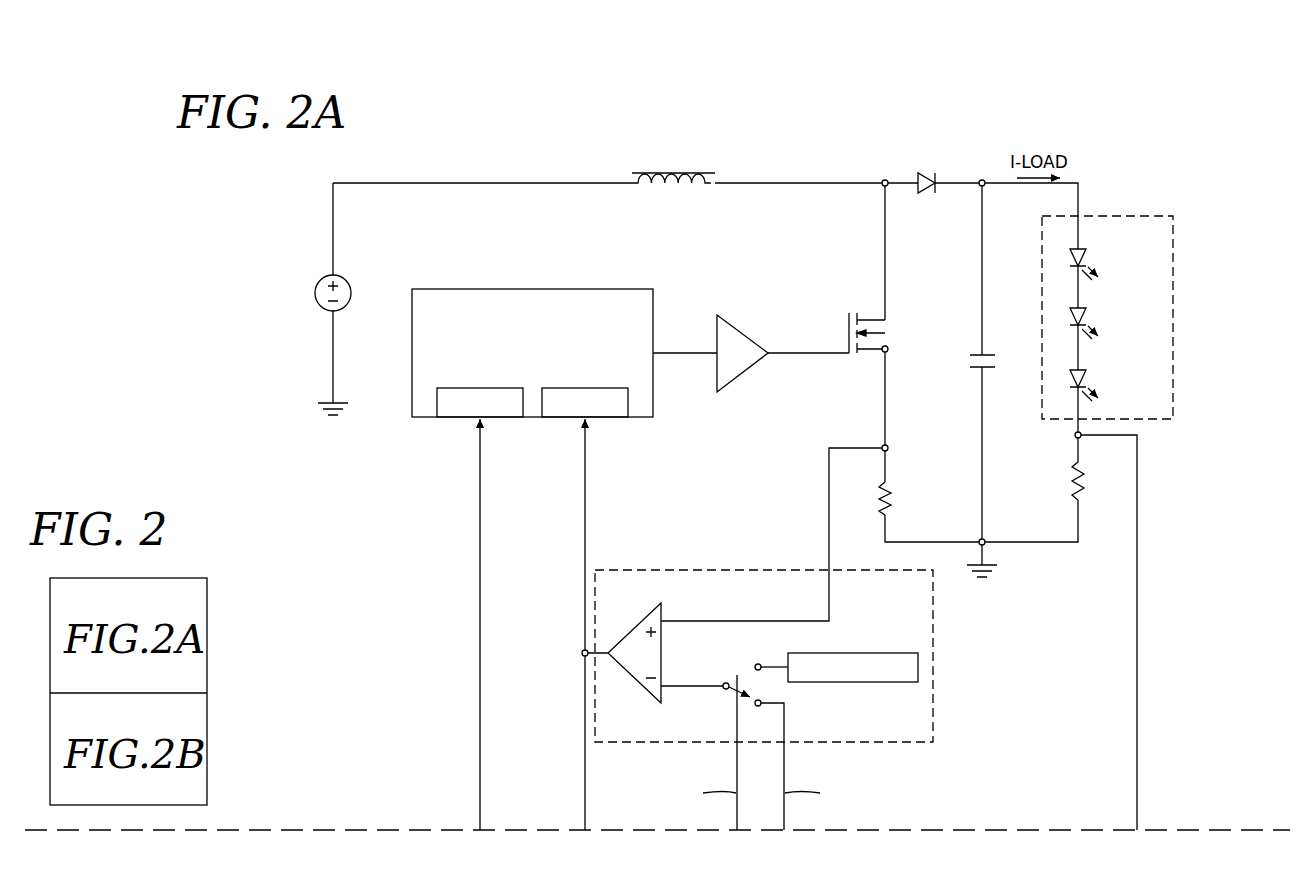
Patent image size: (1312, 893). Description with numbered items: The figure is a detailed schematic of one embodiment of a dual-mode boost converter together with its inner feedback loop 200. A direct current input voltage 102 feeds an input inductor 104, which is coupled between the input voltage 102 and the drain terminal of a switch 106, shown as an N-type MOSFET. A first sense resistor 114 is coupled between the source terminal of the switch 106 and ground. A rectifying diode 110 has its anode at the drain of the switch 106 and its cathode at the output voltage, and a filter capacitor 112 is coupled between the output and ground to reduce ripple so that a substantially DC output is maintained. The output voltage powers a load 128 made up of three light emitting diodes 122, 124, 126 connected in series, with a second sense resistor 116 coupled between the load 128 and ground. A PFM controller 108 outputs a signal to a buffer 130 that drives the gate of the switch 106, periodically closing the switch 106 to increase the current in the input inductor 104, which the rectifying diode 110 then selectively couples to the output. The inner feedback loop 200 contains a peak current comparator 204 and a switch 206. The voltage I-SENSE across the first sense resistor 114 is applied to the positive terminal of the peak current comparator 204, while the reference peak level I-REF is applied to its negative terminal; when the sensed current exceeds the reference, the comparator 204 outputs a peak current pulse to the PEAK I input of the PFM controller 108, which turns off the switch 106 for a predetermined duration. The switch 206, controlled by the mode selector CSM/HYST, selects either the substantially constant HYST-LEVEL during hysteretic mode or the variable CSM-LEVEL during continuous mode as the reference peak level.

The input voltage 102 is at (321, 279).
The input inductor 104 is at (672, 166).
The switch 106 is at (868, 312).
The PFM controller 108 is at (563, 290).
The rectifying diode 110 is at (930, 174).
The filter capacitor 112 is at (976, 352).
The first sense resistor 114 is at (892, 498).
The second sense resistor 116 is at (1075, 482).
The light emitting diode 122 is at (1086, 247).
The light emitting diode 124 is at (1086, 307).
The light emitting diode 126 is at (1086, 367).
The load 128 is at (1134, 317).
The buffer 130 is at (761, 318).
The inner feedback loop 200 is at (789, 700).
The peak current comparator 204 is at (631, 626).
The switch 206 is at (733, 694).